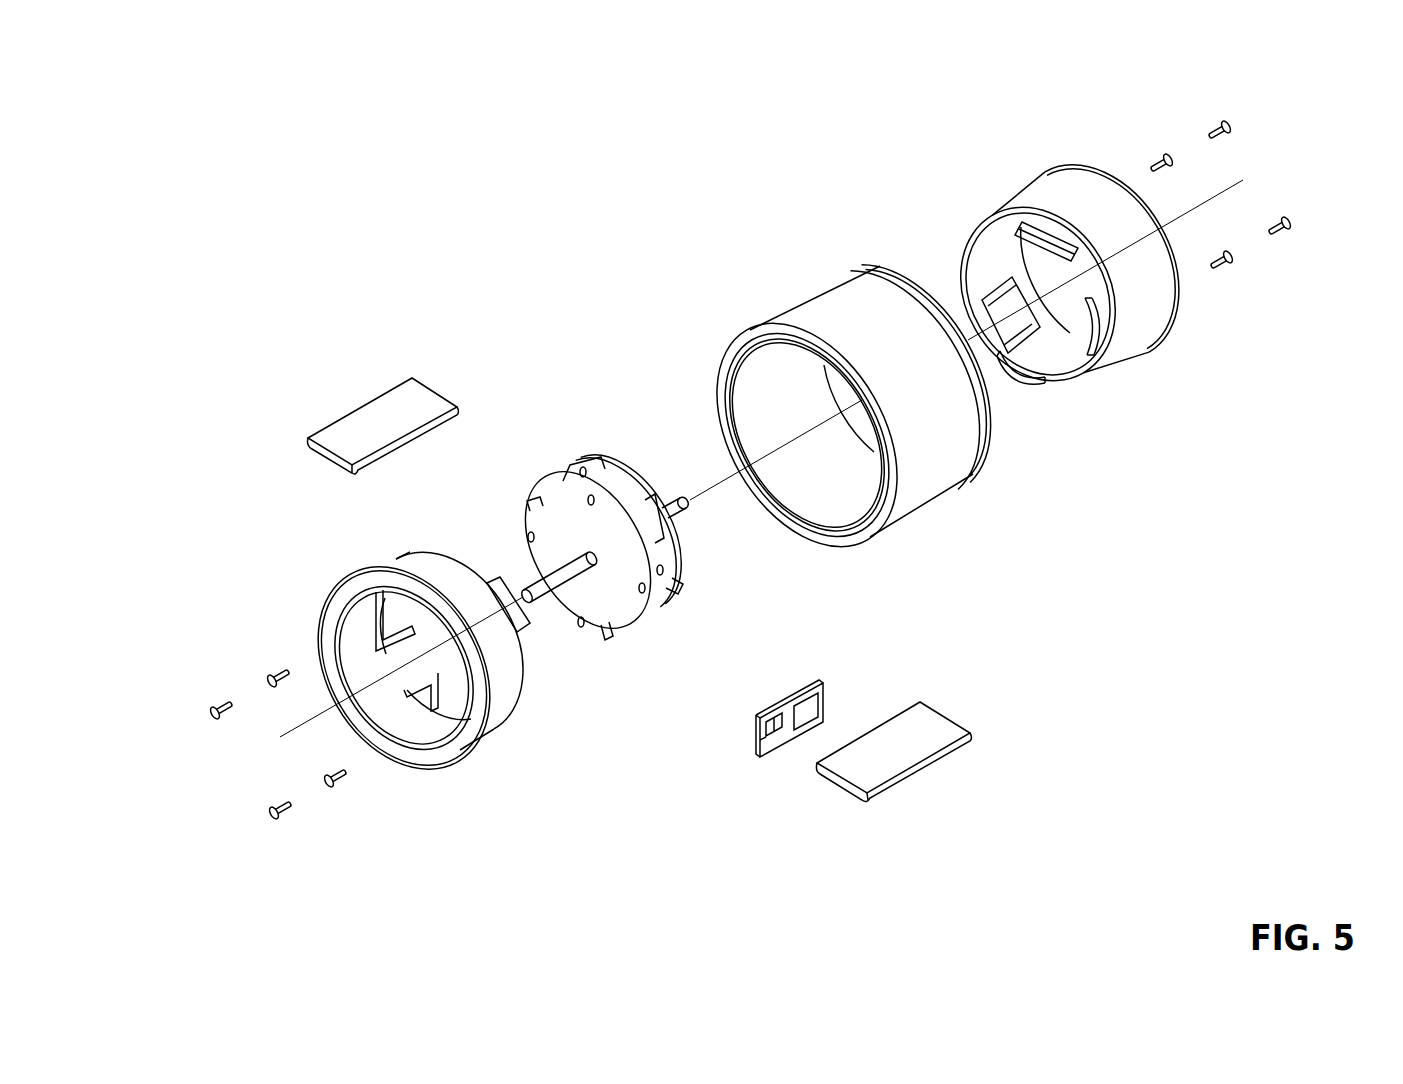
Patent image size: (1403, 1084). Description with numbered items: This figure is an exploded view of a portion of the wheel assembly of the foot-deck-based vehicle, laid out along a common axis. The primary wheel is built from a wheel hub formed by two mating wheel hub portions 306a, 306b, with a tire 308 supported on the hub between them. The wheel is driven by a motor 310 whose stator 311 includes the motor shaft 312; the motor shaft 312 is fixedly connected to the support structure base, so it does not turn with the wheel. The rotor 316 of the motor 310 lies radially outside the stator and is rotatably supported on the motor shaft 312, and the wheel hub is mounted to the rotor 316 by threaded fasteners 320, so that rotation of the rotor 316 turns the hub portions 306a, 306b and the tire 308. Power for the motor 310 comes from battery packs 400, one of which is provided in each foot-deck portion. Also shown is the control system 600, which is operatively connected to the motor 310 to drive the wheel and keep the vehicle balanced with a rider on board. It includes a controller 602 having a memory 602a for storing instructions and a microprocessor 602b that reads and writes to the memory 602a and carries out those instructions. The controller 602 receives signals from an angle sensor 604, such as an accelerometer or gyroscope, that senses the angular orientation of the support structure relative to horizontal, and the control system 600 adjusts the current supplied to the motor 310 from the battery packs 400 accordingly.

The tire 308 is at (812, 290).
The wheel hub portion 306a is at (498, 720).
The wheel hub portion 306b is at (1140, 345).
The motor 310 is at (582, 530).
The stator 311 is at (473, 564).
The motor shaft 312 is at (560, 568).
The rotor 316 is at (620, 490).
The threaded fasteners 320 is at (1217, 128).
The battery pack 400 is at (335, 420).
The control system 600 is at (791, 714).
The controller 602 is at (791, 682).
The memory 602a is at (762, 735).
The microprocessor 602b is at (780, 722).
The angle sensor 604 is at (820, 715).